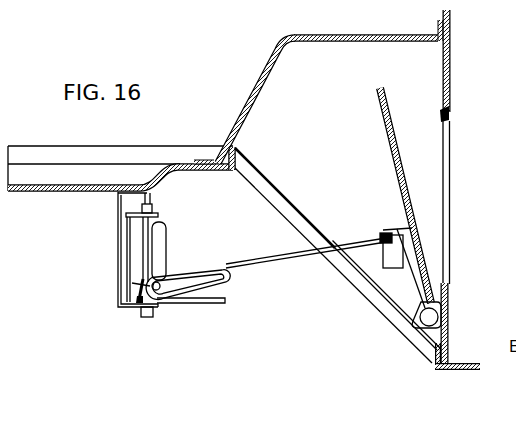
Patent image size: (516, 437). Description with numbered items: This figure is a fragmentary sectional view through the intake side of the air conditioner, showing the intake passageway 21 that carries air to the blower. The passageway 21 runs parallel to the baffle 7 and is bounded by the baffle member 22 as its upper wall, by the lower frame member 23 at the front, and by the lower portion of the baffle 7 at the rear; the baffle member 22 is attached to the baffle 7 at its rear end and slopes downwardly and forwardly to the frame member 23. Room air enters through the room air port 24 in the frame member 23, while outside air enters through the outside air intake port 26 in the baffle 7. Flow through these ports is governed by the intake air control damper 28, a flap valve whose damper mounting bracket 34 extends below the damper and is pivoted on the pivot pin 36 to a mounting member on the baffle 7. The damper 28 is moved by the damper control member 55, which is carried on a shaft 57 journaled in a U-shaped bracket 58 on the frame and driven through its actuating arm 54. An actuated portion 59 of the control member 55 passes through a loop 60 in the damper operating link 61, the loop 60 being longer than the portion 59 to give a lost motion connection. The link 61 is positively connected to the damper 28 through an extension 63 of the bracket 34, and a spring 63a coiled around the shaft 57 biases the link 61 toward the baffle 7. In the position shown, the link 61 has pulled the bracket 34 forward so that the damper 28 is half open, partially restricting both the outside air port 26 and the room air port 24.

The baffle 7 is at (451, 92).
The intake passageway 21 is at (350, 53).
The baffle member 22 is at (283, 45).
The lower frame member 23 is at (47, 190).
The room air port 24 is at (277, 200).
The outside air intake port 26 is at (447, 122).
The intake air control damper 28 is at (383, 140).
The damper mounting bracket 34 is at (418, 280).
The pivot pin 36 is at (412, 322).
The actuating arm 54 is at (222, 302).
The damper control member 55 is at (170, 231).
The shaft 57 is at (151, 204).
The U-shaped bracket 58 is at (117, 229).
The actuated portion 59 is at (163, 307).
The loop 60 is at (231, 278).
The damper operating link 61 is at (268, 259).
The extension 63 is at (383, 230).
The spring 63a is at (141, 306).